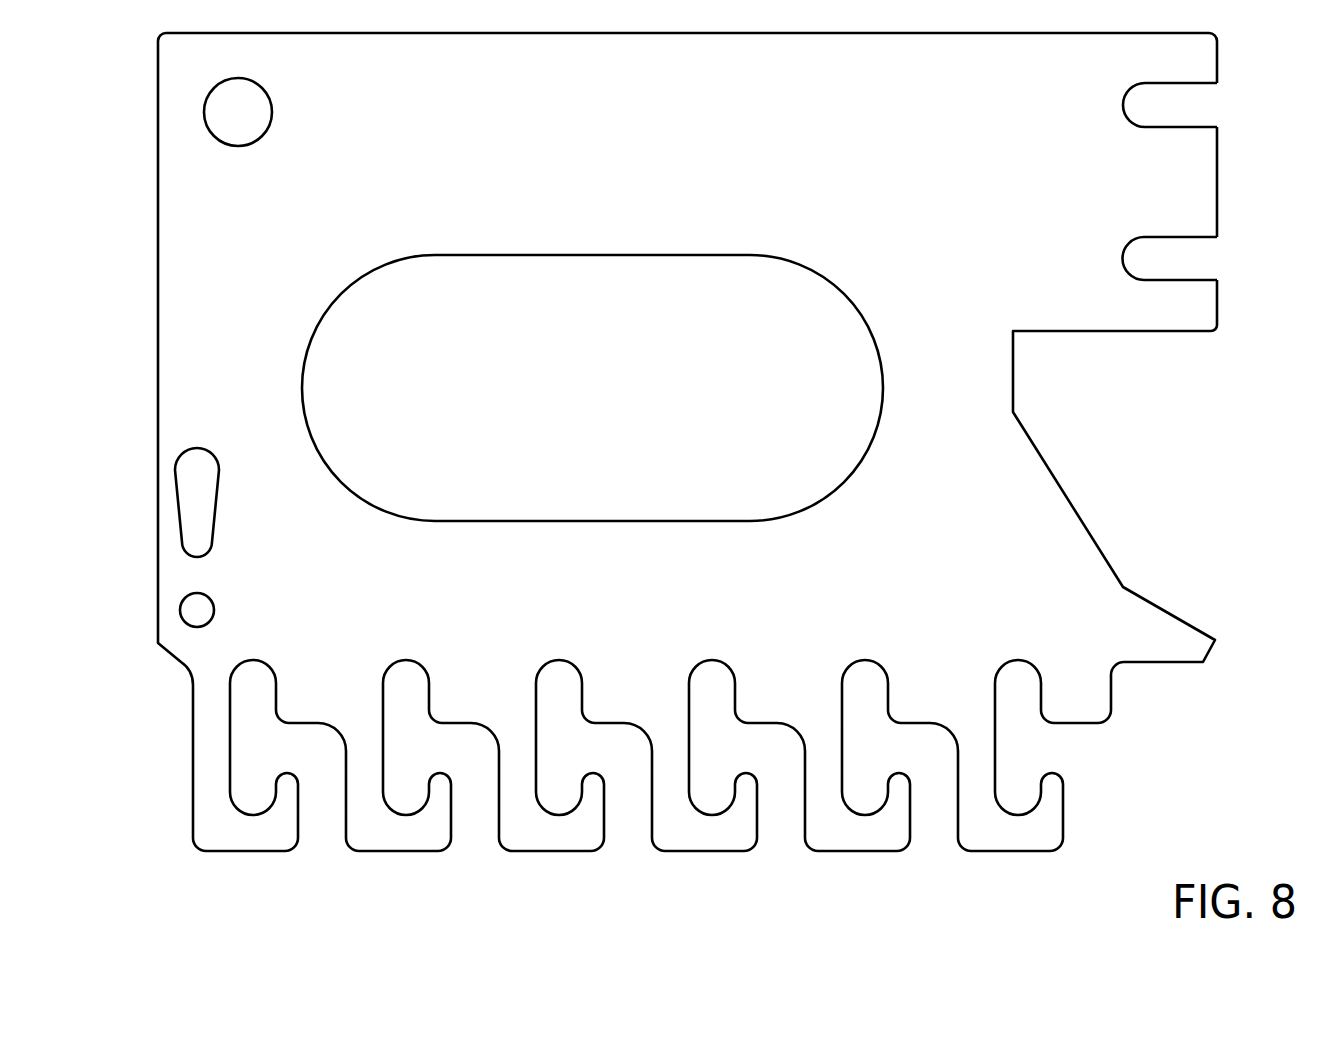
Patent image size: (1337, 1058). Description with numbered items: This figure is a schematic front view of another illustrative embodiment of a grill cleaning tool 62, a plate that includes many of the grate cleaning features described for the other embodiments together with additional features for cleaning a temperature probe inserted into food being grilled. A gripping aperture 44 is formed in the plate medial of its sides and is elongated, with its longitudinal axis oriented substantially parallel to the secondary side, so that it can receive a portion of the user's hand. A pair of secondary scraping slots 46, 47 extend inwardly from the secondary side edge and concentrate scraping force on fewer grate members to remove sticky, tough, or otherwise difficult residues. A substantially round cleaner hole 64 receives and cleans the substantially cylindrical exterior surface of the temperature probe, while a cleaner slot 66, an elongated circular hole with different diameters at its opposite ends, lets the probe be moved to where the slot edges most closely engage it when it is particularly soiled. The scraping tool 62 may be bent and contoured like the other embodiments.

The gripping aperture 44 is at (340, 485).
The secondary scraping slot 46 is at (1123, 100).
The secondary scraping slot 47 is at (1122, 255).
The grill cleaning tool 62 is at (1196, 398).
The cleaner hole 64 is at (188, 620).
The cleaner slot 66 is at (180, 502).